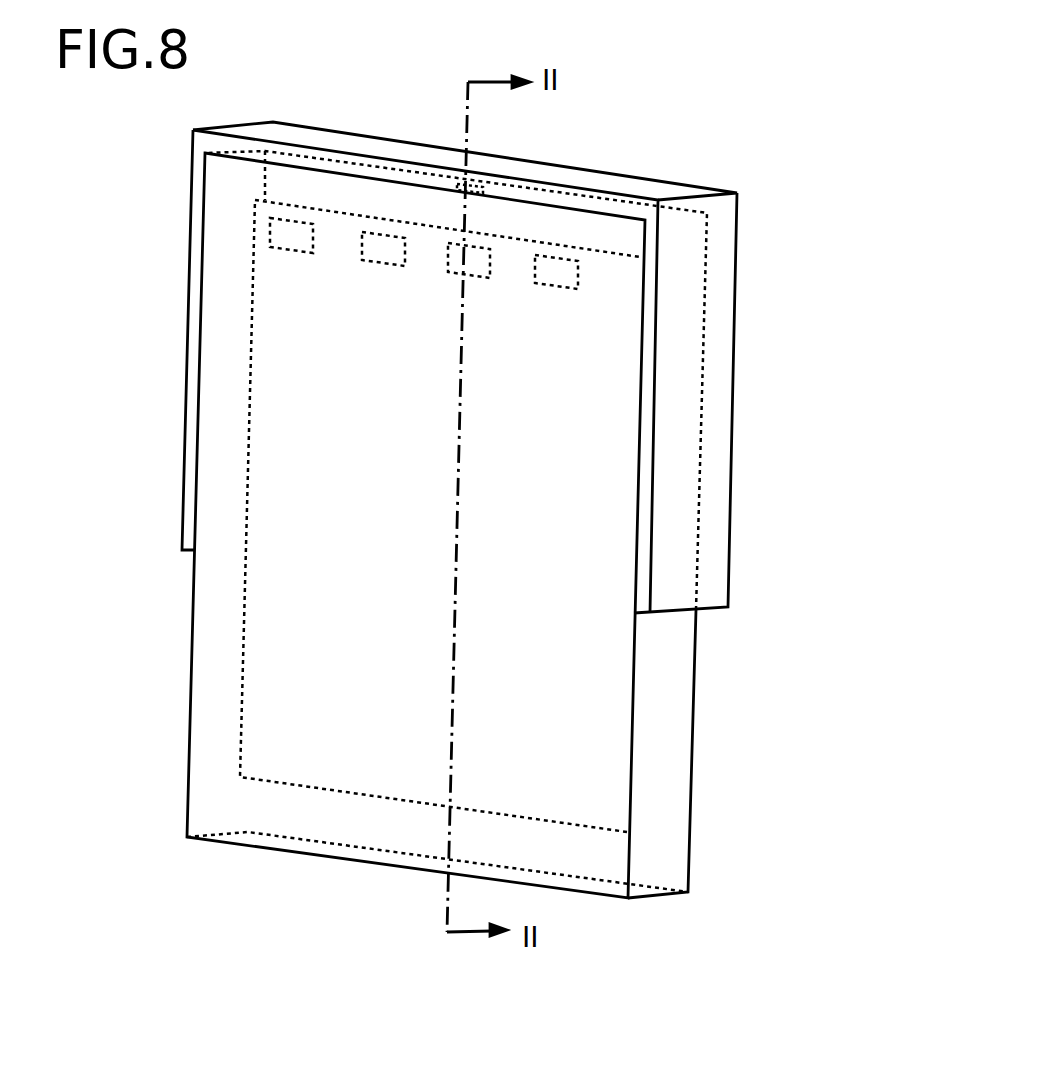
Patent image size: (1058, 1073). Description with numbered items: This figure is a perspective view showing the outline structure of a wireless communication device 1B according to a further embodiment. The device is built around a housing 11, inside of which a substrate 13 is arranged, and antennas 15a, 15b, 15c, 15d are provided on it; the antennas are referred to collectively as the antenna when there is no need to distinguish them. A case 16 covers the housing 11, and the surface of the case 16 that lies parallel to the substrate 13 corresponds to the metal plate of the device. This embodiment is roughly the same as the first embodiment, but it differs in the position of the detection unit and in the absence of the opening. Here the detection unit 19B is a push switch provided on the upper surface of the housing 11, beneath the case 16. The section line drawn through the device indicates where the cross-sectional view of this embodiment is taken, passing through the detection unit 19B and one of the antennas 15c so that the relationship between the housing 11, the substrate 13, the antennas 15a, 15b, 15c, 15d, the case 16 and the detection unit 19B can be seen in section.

The wireless communication device 1B is at (703, 119).
The housing 11 is at (695, 682).
The substrate 13 is at (242, 598).
The antenna 15a is at (293, 251).
The antenna 15b is at (380, 267).
The antenna 15c is at (480, 278).
The antenna 15d is at (558, 289).
The case 16 is at (318, 143).
The detection unit 19B is at (476, 188).